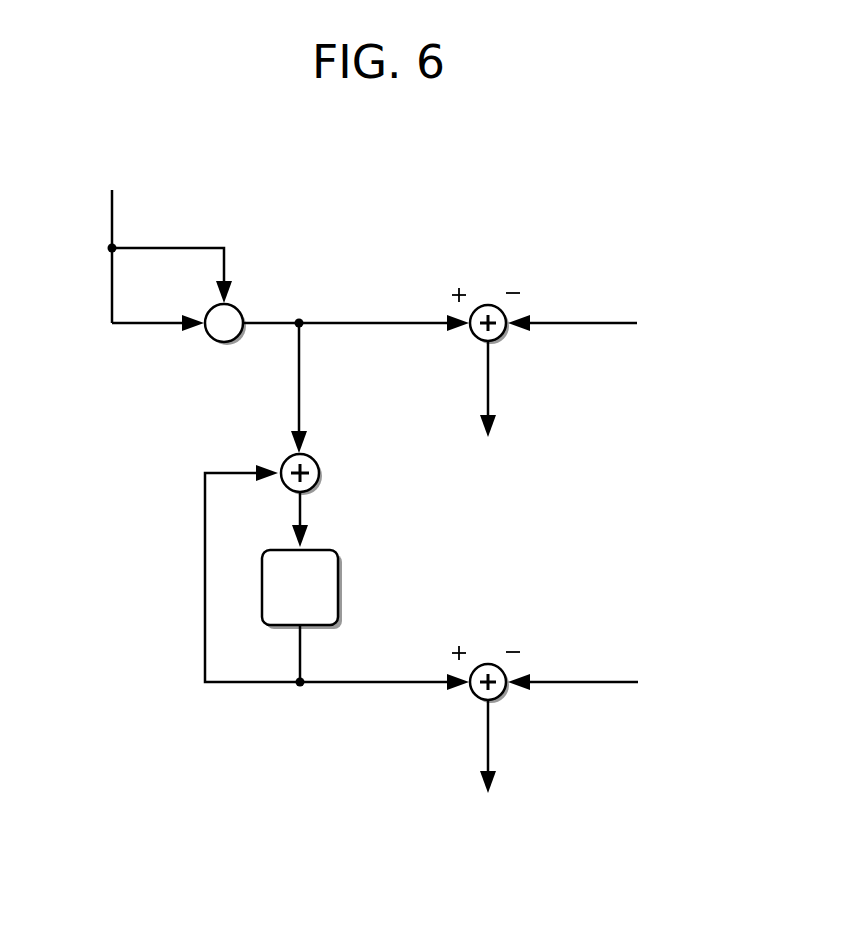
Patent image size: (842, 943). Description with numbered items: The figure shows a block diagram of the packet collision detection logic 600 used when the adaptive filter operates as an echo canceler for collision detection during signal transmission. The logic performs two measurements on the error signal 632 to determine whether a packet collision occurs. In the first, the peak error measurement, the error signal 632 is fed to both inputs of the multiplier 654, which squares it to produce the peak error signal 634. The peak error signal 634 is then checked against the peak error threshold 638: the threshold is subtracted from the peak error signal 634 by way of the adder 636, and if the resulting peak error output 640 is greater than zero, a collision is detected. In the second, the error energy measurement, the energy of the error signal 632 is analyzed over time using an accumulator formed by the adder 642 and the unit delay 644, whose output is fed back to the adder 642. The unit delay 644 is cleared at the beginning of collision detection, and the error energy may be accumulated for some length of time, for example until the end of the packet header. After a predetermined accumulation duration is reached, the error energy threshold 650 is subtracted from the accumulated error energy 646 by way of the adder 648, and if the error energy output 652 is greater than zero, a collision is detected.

The packet collision detection logic 600 is at (582, 190).
The error signal 632 is at (113, 230).
The peak error signal 634 is at (297, 318).
The adder 636 is at (498, 303).
The peak error threshold 638 is at (582, 320).
The peak error output 640 is at (491, 397).
The adder 642 is at (318, 460).
The unit delay 644 is at (342, 572).
The error energy 646 is at (250, 685).
The adder 648 is at (498, 662).
The error energy threshold 650 is at (582, 679).
The error energy output 652 is at (491, 757).
The multiplier 654 is at (205, 338).